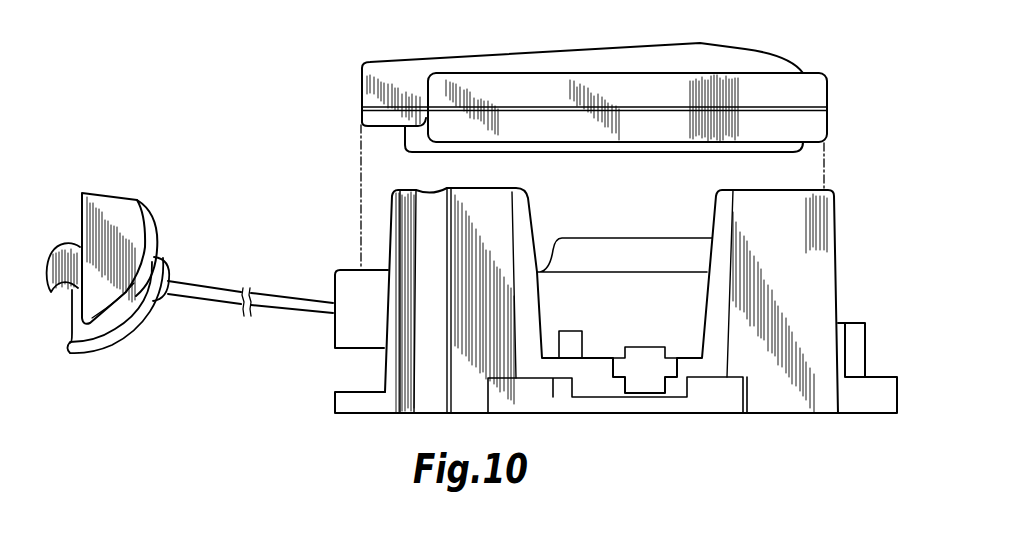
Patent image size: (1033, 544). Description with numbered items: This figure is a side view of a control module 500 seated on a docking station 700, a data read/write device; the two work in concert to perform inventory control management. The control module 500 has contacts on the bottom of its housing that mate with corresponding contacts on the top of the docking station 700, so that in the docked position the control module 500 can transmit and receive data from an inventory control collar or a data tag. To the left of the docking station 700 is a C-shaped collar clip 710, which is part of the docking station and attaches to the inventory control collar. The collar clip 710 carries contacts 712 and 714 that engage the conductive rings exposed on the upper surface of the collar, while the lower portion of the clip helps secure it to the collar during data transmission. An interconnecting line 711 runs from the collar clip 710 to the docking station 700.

The control module 500 is at (752, 48).
The docking station 700 is at (828, 258).
The collar clip 710 is at (115, 191).
The interconnecting line 711 is at (207, 301).
The contact 712 is at (98, 352).
The contact 714 is at (56, 292).